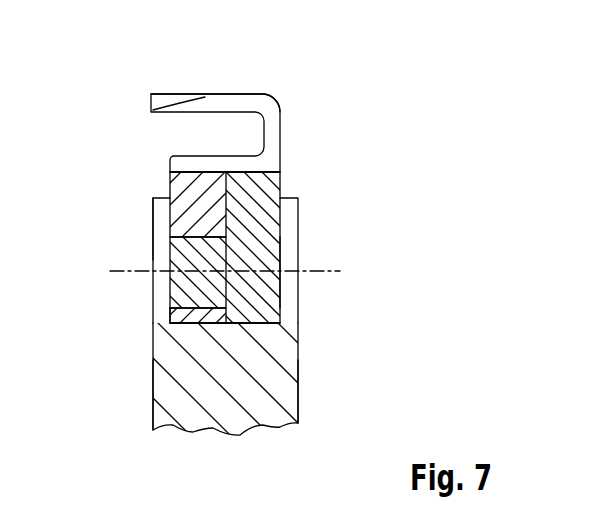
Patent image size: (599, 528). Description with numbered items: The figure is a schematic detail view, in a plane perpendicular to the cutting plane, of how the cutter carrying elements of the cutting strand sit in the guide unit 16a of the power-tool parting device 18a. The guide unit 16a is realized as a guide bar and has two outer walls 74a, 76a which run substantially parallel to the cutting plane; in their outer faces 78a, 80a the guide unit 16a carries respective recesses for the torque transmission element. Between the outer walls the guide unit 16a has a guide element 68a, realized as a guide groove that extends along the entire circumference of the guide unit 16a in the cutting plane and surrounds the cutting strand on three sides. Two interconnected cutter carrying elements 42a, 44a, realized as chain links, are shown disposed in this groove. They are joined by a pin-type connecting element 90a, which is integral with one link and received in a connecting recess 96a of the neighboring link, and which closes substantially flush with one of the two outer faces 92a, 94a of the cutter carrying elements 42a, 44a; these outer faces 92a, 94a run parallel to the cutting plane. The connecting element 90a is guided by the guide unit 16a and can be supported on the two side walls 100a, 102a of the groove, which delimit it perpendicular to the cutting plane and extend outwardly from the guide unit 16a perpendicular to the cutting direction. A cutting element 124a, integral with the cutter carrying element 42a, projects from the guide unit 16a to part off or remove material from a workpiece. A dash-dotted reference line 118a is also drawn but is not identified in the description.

The power-tool parting device 18a is at (380, 65).
The cutting element 124a is at (257, 96).
The outer face 94a is at (172, 182).
The outer face 92a is at (280, 185).
The cutter carrying element 42a is at (190, 219).
The cutter carrying element 44a is at (268, 219).
The side wall of guide groove 100a is at (174, 257).
The side wall of guide groove 102a is at (281, 252).
The connecting element 90a is at (160, 282).
The center axis 118a is at (312, 274).
The connecting recess 96a is at (176, 314).
The guide element 68a is at (253, 326).
The outer wall 76a is at (152, 342).
The outer wall 74a is at (298, 377).
The outer face 80a is at (146, 393).
The outer face 78a is at (306, 400).
The guide unit 16a is at (302, 408).